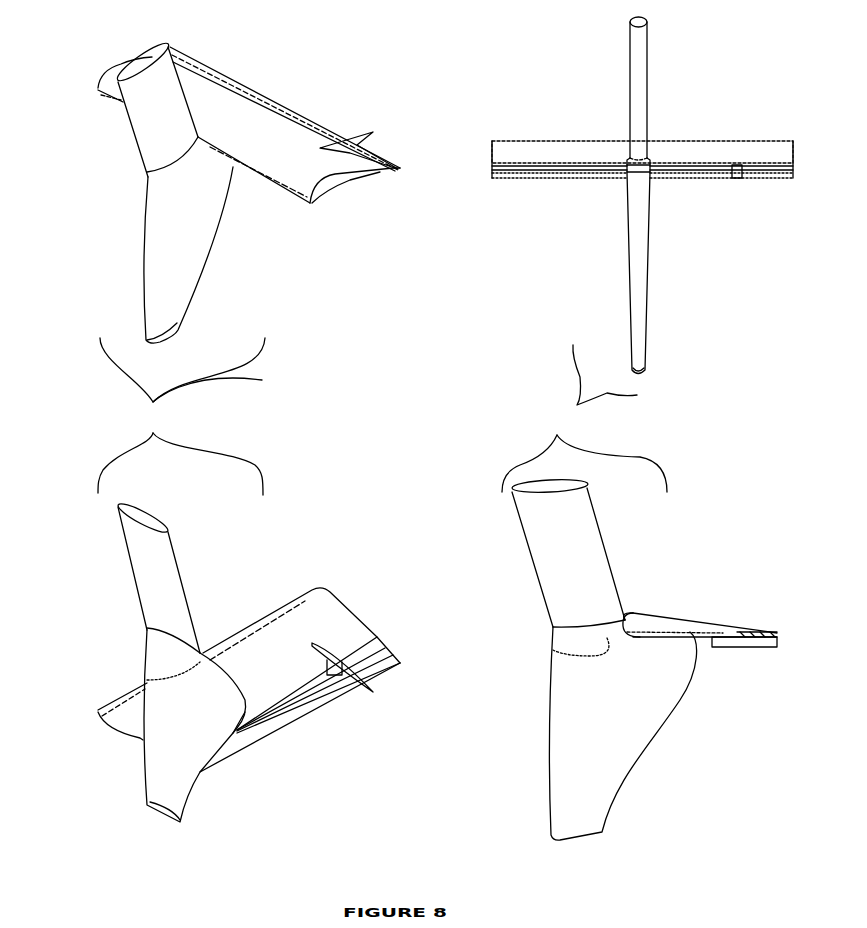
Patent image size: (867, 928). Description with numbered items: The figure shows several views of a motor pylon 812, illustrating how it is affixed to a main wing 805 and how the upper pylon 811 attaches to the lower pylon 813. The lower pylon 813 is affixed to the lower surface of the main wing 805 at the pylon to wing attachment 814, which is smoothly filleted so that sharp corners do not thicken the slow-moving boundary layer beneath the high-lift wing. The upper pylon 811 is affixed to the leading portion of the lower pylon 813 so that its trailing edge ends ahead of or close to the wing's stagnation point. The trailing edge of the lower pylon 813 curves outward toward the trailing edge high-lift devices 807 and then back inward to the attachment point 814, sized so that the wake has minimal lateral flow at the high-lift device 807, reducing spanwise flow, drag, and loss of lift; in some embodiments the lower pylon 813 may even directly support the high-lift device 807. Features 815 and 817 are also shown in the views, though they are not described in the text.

The main wing 805 is at (313, 173).
The trailing edge high-lift device 807 is at (537, 173).
The upper pylon 811 is at (148, 122).
The motor pylon 812 is at (382, 416).
The lower pylon 813 is at (170, 262).
The pylon to wing attachment 814 is at (147, 680).
The nose 815 is at (627, 610).
The collar 817 is at (200, 170).